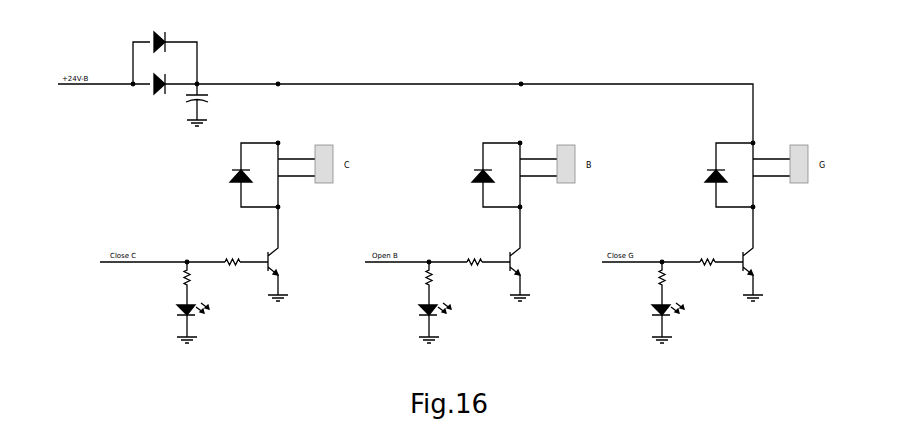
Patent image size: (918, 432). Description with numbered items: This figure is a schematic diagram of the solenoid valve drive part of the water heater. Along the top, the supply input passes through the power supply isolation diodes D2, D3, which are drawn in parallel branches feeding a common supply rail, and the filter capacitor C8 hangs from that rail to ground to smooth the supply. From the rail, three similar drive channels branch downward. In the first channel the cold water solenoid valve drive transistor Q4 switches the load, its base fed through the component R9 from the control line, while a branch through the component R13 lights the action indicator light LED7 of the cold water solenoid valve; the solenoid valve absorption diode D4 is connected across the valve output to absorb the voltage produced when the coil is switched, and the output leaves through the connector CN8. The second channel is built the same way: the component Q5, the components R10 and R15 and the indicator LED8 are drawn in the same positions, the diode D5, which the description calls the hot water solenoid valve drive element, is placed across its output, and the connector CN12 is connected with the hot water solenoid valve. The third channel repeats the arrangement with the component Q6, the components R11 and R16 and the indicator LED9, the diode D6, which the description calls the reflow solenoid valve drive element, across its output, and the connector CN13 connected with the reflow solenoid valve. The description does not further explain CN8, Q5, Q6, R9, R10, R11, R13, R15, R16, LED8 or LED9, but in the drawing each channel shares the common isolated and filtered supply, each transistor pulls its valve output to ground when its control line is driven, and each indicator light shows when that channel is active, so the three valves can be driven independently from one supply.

The power supply isolation diode D2 is at (159, 36).
The power supply isolation diode D3 is at (159, 79).
The filter capacitor C8 is at (204, 110).
The solenoid valve absorption diode D4 is at (232, 176).
The hot water solenoid valve drive transistor D5 is at (474, 176).
The reflow solenoid valve drive transistor D6 is at (707, 176).
The connector CN8 is at (323, 164).
The hot water solenoid valve connector CN12 is at (565, 164).
The reflow solenoid valve connector CN13 is at (798, 164).
The cold water solenoid valve drive transistor Q4 is at (282, 254).
The transistor Q5 is at (523, 254).
The transistor Q6 is at (757, 254).
The resistor R9 is at (232, 257).
The resistor R10 is at (474, 257).
The resistor R11 is at (707, 257).
The resistor R13 is at (177, 283).
The resistor R15 is at (419, 283).
The resistor R16 is at (652, 283).
The action indicator light of the cold water solenoid valve LED7 is at (179, 323).
The light emitting diode LED8 is at (421, 323).
The light emitting diode LED9 is at (654, 323).